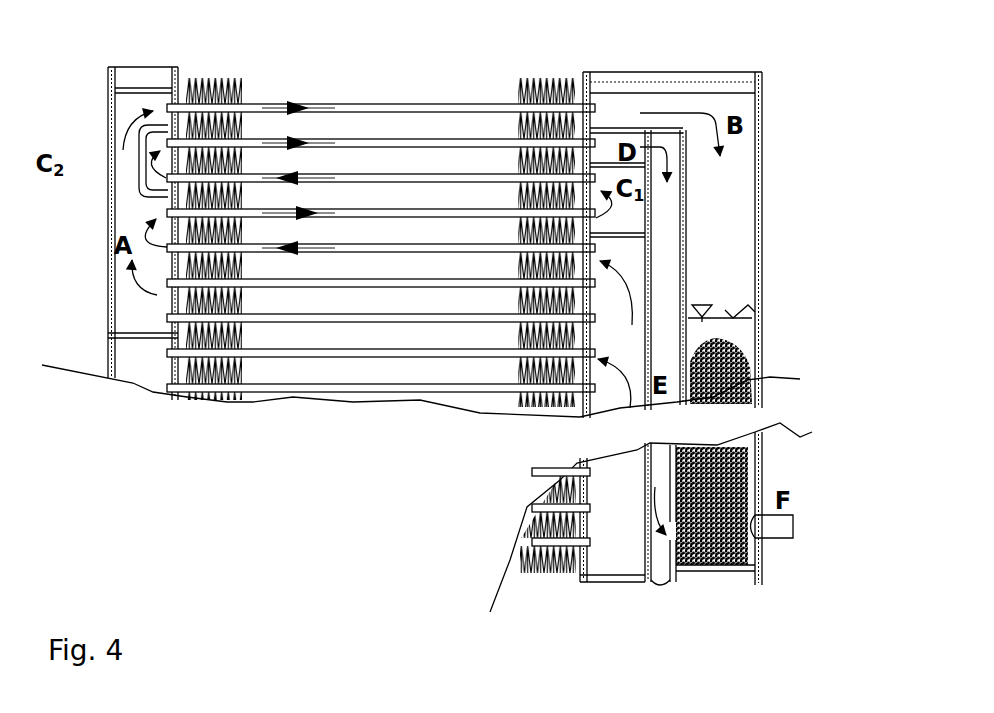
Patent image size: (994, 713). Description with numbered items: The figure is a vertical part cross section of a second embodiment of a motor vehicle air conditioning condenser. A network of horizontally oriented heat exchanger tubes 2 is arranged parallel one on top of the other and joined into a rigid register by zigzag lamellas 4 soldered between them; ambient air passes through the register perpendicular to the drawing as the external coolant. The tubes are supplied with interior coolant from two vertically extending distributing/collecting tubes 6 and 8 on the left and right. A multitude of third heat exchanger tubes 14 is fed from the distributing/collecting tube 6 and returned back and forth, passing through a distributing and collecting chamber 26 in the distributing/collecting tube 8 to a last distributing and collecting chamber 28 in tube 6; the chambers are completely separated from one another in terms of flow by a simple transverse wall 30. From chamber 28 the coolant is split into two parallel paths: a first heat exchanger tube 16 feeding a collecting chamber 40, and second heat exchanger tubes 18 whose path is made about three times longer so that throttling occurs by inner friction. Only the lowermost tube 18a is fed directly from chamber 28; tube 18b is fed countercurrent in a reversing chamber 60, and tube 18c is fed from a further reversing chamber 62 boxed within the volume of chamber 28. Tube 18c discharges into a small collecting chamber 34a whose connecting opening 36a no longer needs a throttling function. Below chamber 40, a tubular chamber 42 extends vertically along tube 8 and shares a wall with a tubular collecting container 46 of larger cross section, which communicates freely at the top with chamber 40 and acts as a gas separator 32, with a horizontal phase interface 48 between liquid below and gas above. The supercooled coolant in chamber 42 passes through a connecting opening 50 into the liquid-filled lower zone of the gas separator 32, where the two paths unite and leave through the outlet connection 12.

The heat exchanger tubes 2 is at (335, 108).
The zigzag lamellas 4 is at (222, 83).
The distributing/collecting tube 6 is at (154, 64).
The distributing/collecting tube 8 is at (607, 594).
The outlet connection 12 is at (811, 570).
The third heat exchanger tube 14 is at (462, 388).
The first heat exchanger tube 16 is at (490, 107).
The second heat exchanger tubes 18 is at (482, 217).
The heat exchanger tube 18a is at (247, 213).
The heat exchanger tube 18b is at (356, 180).
The heat exchanger tube 18c is at (367, 143).
The distributing and collecting chamber 26 is at (593, 335).
The distributing and collecting chamber 28 is at (123, 331).
The transverse wall 30 is at (148, 338).
The gas separator 32 is at (706, 248).
The collecting chamber 34a is at (615, 73).
The connecting opening 36a is at (696, 205).
The collecting chamber 40 is at (603, 123).
The tubular chamber 42 is at (646, 349).
The collecting container 46 is at (779, 199).
The phase interface 48 is at (757, 308).
The connecting opening 50 is at (667, 540).
The reversing chamber 60 is at (613, 228).
The reversing chamber 62 is at (155, 137).